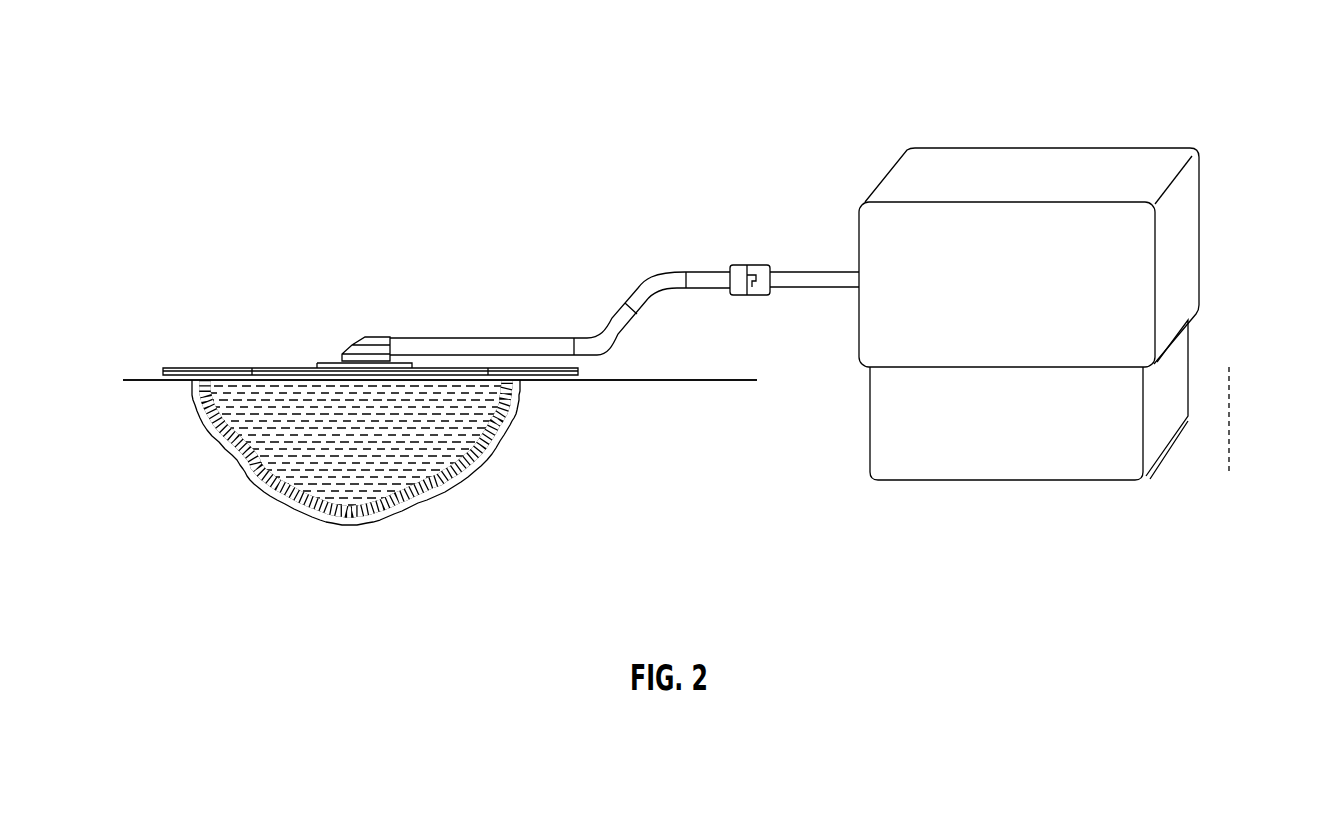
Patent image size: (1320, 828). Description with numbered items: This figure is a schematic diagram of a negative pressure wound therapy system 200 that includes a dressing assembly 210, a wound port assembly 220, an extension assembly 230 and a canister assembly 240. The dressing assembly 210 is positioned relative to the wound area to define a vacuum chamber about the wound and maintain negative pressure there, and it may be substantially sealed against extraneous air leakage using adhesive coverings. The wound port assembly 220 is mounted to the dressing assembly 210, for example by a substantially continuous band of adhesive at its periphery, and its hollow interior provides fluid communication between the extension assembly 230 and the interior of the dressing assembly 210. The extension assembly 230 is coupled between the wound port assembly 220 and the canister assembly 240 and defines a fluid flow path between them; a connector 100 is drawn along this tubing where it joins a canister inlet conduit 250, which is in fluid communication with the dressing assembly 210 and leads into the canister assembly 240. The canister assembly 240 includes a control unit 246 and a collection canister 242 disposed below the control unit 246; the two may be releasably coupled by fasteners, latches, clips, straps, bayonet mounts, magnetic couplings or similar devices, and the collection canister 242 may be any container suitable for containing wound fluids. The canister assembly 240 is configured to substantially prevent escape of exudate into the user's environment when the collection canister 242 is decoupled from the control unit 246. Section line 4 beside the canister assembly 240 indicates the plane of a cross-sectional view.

The negative pressure wound therapy system 200 is at (519, 95).
The dressing assembly 210 is at (441, 505).
The wound port assembly 220 is at (366, 329).
The extension assembly 230 is at (648, 277).
The connector 100 is at (746, 259).
The canister inlet conduit 250 is at (812, 291).
The canister assembly 240 is at (1084, 136).
The control unit 246 is at (865, 177).
The collection canister 242 is at (856, 443).
The section line 4- 4 is at (1229, 367).